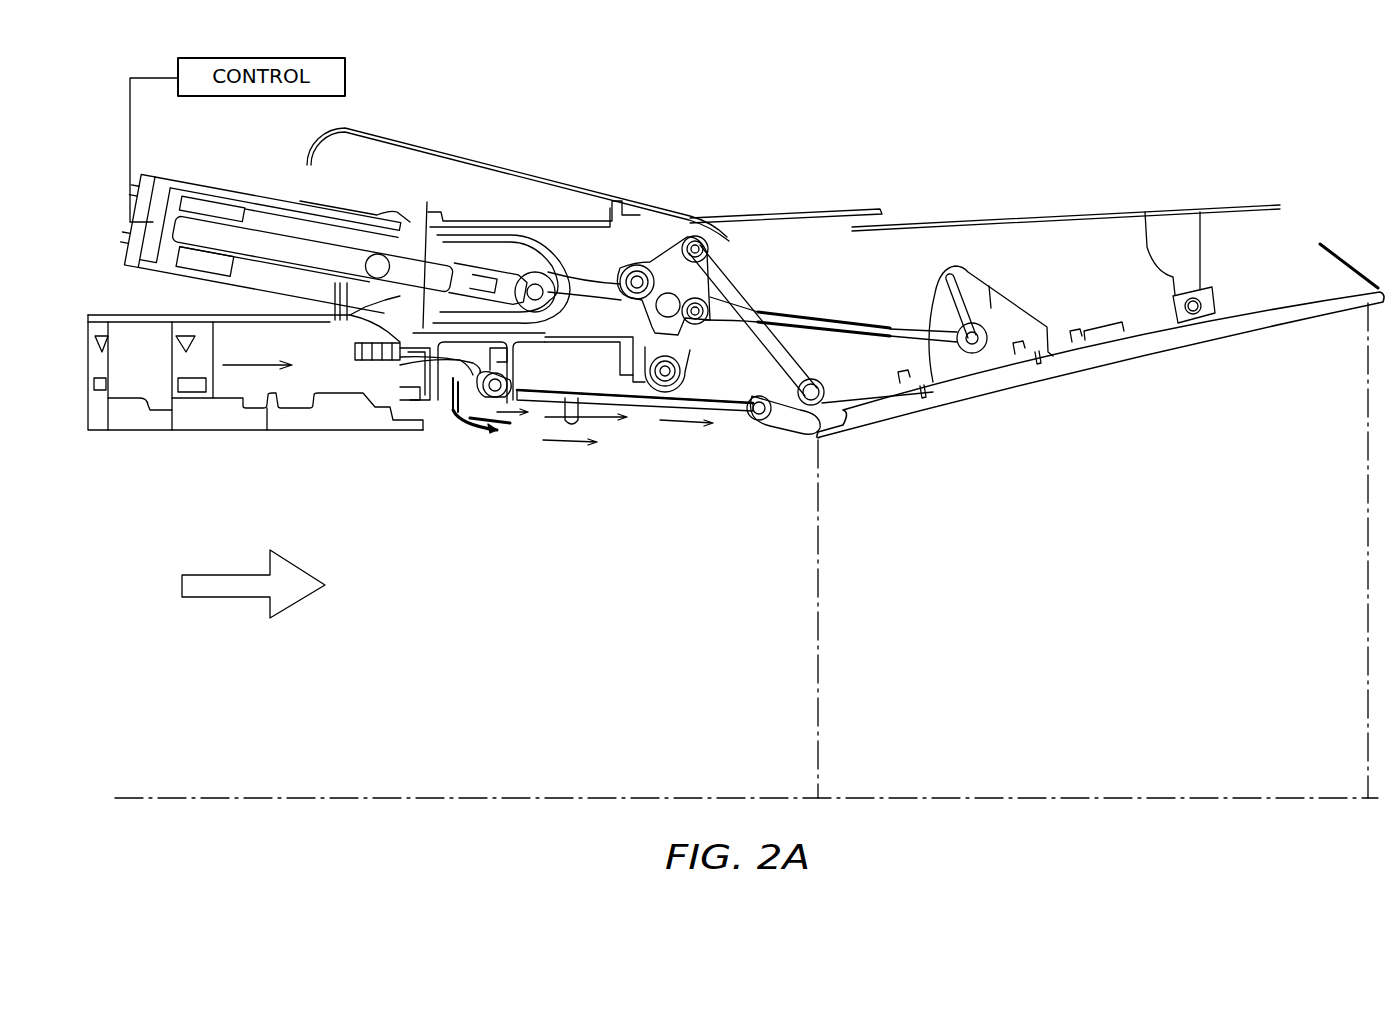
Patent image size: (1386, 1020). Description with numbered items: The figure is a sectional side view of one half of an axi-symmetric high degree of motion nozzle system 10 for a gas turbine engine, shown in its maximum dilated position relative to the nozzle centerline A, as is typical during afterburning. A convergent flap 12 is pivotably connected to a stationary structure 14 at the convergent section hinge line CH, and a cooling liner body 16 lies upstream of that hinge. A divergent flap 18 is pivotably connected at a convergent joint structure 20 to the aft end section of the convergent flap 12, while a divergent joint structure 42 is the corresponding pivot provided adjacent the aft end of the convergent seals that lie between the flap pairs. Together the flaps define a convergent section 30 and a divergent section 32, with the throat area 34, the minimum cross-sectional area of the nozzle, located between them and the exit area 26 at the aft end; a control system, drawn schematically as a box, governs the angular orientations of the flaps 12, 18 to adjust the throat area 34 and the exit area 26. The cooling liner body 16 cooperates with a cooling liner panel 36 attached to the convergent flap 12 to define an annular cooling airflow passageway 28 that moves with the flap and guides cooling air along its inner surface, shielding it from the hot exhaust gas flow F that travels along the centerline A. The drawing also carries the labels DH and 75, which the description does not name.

The nozzle system 10 is at (890, 108).
The convergent flap 12 is at (643, 408).
The stationary structure 14 is at (575, 330).
The cooling liner body 16 is at (358, 412).
The divergent flap 18 is at (1010, 394).
The convergent joint structure 20 is at (748, 425).
The exit area 26 is at (1366, 516).
The cooling airflow passageway 28 is at (280, 355).
The convergent section 30 is at (542, 648).
The divergent section 32 is at (1082, 556).
The throat area 34 is at (820, 604).
The cooling liner panel 36 is at (523, 428).
The divergent joint structure 42 is at (400, 357).
The trailing edge 75 is at (1375, 290).
The convergent section hinge line CH is at (500, 385).
The door hinge DH is at (752, 400).
The combustion gas path F is at (222, 560).
The nozzle centerline A is at (1200, 796).